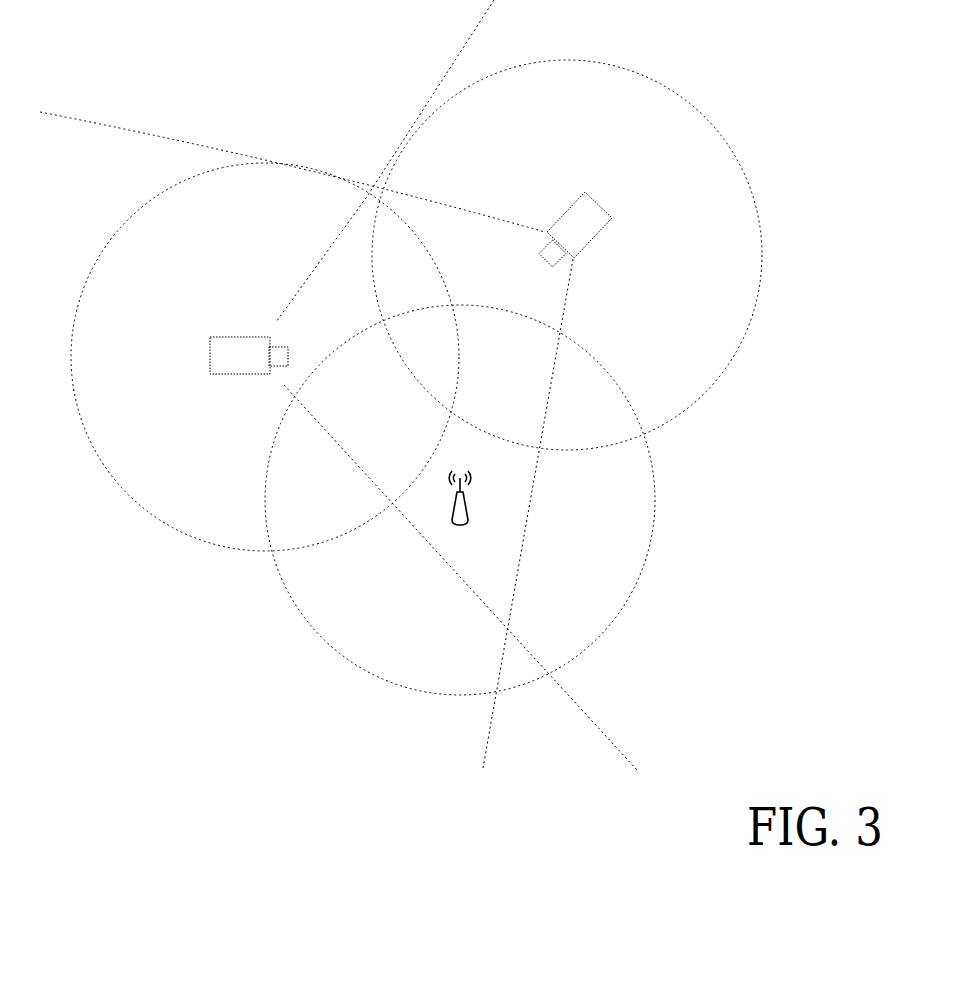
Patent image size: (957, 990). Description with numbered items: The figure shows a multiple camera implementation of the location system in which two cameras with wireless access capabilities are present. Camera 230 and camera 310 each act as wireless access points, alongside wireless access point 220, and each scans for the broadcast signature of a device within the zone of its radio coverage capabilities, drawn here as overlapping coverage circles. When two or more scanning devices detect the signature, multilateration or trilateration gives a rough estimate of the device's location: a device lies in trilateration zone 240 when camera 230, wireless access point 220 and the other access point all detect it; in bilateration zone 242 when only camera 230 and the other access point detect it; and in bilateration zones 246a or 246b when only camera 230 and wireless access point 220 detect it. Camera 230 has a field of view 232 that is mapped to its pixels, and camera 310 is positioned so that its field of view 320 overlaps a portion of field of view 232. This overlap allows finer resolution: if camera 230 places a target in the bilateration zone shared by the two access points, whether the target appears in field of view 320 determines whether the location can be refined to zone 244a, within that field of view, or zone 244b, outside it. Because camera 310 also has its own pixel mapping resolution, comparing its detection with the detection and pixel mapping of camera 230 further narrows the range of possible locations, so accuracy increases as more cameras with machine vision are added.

The wireless access point 220 is at (458, 513).
The camera 230 is at (251, 337).
The field of view 232 is at (429, 66).
The trilateration zone 240 is at (420, 362).
The bilateration zone 242 is at (412, 255).
The zone within the FOV 244a is at (502, 375).
The zone outside the FOV 244b is at (599, 377).
The bilateration zone 246a is at (365, 455).
The bilateration zone 246b is at (335, 480).
The camera 310 is at (580, 236).
The field of view 320 is at (105, 137).